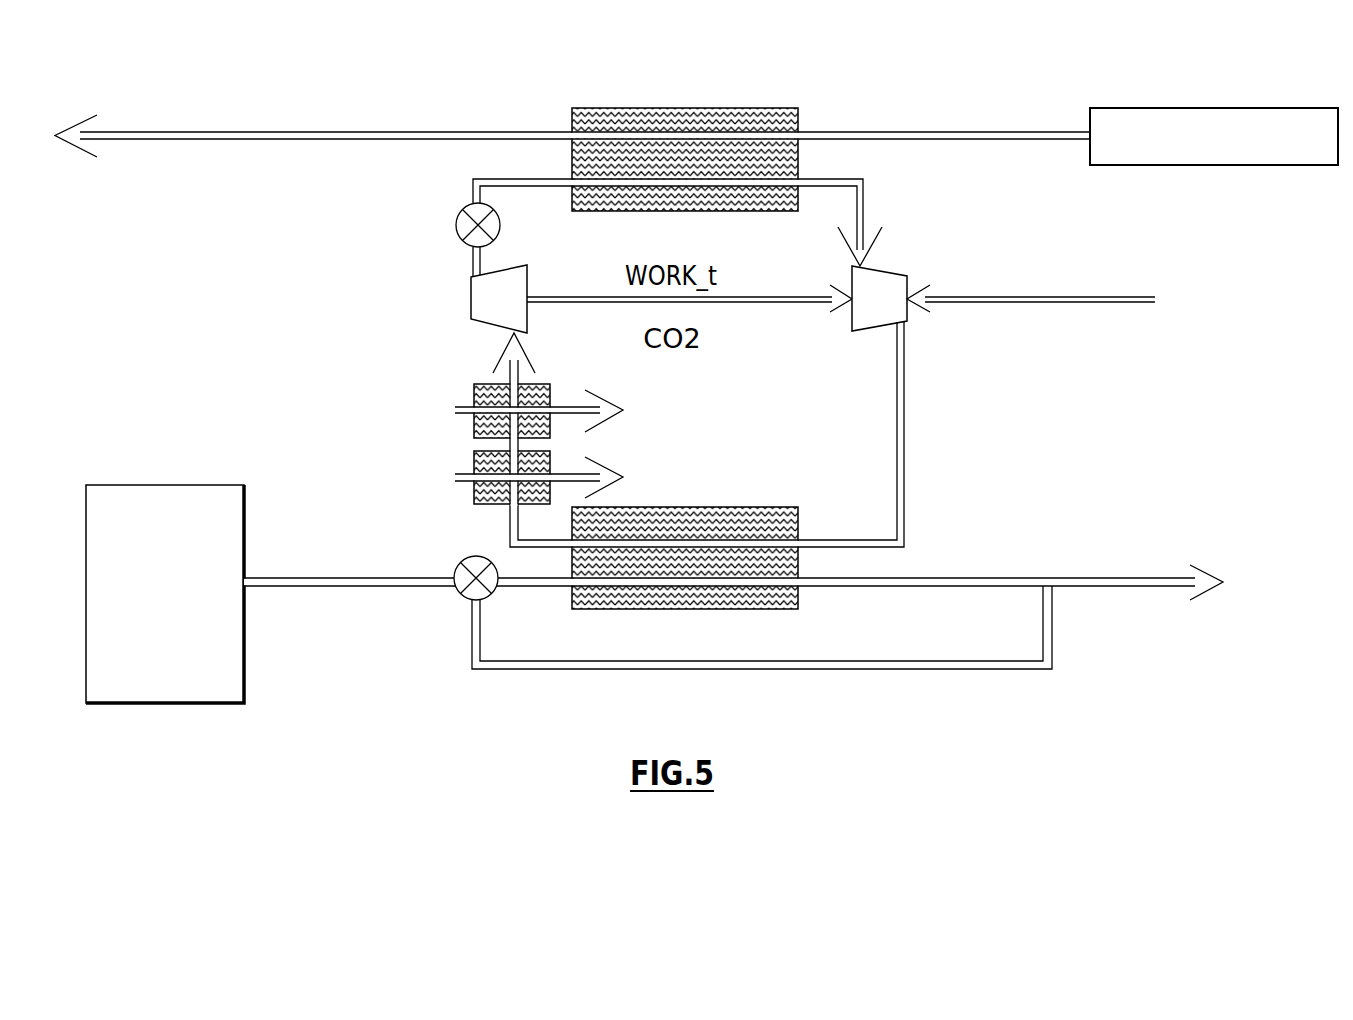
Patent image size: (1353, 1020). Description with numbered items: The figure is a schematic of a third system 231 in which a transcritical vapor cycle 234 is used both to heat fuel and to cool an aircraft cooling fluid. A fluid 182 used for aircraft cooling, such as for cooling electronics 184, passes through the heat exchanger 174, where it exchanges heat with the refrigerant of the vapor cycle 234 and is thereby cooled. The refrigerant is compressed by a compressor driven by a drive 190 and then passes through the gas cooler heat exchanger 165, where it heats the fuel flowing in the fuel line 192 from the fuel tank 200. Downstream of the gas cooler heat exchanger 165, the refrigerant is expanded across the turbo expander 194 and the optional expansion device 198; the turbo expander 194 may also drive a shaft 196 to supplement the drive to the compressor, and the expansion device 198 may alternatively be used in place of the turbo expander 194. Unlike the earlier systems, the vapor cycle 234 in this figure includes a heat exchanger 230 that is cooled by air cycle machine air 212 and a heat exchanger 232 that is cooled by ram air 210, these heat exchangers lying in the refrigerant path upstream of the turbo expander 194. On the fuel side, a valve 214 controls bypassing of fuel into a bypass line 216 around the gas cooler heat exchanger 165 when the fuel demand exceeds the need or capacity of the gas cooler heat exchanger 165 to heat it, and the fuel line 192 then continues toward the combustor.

The gas cooler heat exchanger 165 is at (703, 522).
The heat exchanger 174 is at (688, 127).
The fluid 182 is at (400, 130).
The electronics 184 is at (1280, 165).
The drive 190 is at (1035, 302).
The fuel line 192 is at (1083, 578).
The turbo expander 194 is at (522, 282).
The shaft 196 is at (763, 293).
The expansion device 198 is at (456, 224).
The fuel tank 200 is at (152, 508).
The ram air 210 is at (463, 483).
The air cycle machine air 212 is at (455, 410).
The valve 214 is at (468, 602).
The bypass line 216 is at (503, 673).
The heat exchanger 230 is at (550, 393).
The system 231 is at (273, 285).
The heat exchanger 232 is at (550, 460).
The transcritical vapor cycle 234 is at (948, 414).